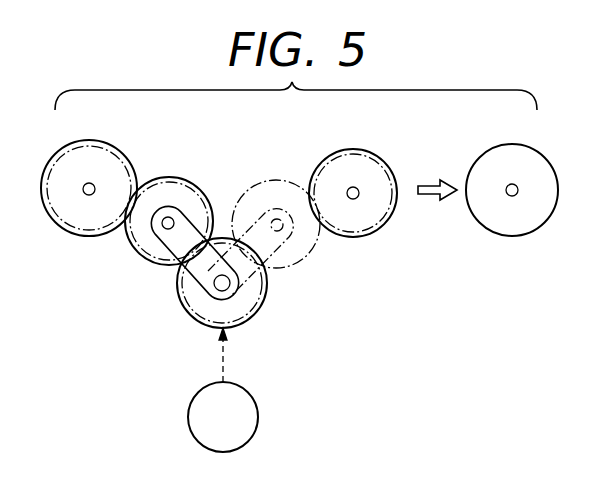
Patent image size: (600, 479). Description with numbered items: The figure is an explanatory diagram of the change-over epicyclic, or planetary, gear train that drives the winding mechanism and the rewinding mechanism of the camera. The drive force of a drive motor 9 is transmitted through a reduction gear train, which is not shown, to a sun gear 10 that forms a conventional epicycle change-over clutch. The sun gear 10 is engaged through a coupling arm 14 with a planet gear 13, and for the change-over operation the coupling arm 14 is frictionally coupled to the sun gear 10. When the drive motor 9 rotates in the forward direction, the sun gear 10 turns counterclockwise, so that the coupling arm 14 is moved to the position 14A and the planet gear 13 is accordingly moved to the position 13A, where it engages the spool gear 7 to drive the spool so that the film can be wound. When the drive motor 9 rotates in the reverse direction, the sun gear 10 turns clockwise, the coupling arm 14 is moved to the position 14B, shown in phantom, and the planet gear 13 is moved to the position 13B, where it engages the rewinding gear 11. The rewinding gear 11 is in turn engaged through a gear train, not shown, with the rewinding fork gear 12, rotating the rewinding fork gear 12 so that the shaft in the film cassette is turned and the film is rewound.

The spool gear 7 is at (95, 154).
The drive motor 9 is at (259, 407).
The sun gear 10 is at (262, 300).
The rewinding gear 11 is at (383, 170).
The rewinding fork gear 12 is at (492, 158).
The planet gear 13 is at (199, 216).
The planet gear position 13A is at (175, 197).
The planet gear position 13B is at (278, 189).
The coupling arm 14 is at (241, 282).
The coupling arm position 14A is at (167, 253).
The coupling arm position 14B is at (294, 253).